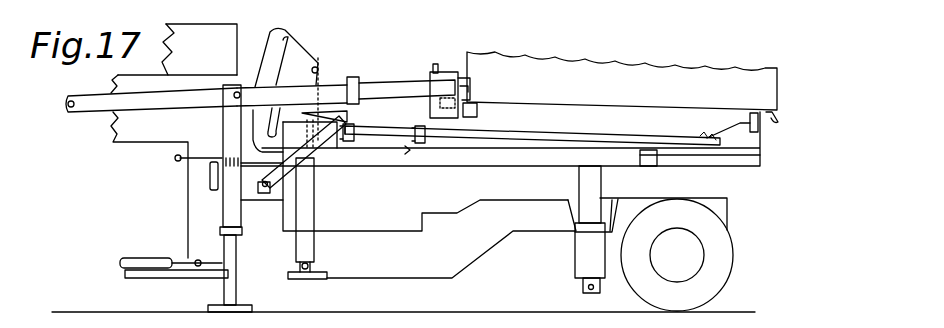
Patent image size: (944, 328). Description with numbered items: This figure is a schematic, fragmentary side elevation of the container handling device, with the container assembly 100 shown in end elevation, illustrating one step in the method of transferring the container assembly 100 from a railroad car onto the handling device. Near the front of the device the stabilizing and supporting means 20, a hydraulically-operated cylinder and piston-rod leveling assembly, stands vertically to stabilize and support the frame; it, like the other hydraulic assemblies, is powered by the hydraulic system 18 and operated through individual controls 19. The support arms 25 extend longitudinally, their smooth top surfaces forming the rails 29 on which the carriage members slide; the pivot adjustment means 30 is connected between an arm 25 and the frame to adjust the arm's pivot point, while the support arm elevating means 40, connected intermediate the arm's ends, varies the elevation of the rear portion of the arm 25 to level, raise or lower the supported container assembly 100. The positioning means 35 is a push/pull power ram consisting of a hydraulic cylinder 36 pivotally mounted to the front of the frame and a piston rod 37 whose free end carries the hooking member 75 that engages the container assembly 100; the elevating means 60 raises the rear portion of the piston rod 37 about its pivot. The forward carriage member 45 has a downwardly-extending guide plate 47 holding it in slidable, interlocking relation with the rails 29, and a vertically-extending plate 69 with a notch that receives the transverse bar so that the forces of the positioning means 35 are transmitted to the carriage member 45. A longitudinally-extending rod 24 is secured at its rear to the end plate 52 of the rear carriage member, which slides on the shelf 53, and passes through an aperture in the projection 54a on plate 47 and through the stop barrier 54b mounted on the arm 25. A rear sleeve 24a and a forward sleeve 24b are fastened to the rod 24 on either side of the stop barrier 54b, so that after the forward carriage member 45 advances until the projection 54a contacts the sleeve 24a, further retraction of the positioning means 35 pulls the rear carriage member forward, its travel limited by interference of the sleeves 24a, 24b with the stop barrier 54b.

The hydraulic system 18 is at (237, 33).
The individual controls 19 is at (210, 166).
The stabilizing and supporting means 20 is at (279, 228).
The longitudinally-extending rods 24 is at (486, 149).
The rear sleeve 24a is at (406, 150).
The forward sleeve 24b is at (348, 142).
The support arms 25 is at (561, 149).
The rails 29 is at (567, 125).
The pivot adjustment means 30 is at (357, 209).
The positioning means 35 is at (80, 115).
The hydraulic cylinders 36 is at (352, 77).
The piston rods 37 is at (389, 82).
The support arm elevating means 40 is at (579, 256).
The forward positioning or carriage member 45 is at (520, 129).
The downwardly-extending plates 47 is at (420, 124).
The downwardly-extending plates 52 is at (748, 140).
The longitudinally-extending shelves 53 is at (657, 168).
The projections 54a is at (425, 150).
The stop barriers 54b is at (357, 141).
The elevating means 60 is at (281, 172).
The vertically-extending plates 69 is at (440, 64).
The hooking members 75 is at (466, 78).
The container assembly 100 is at (715, 49).